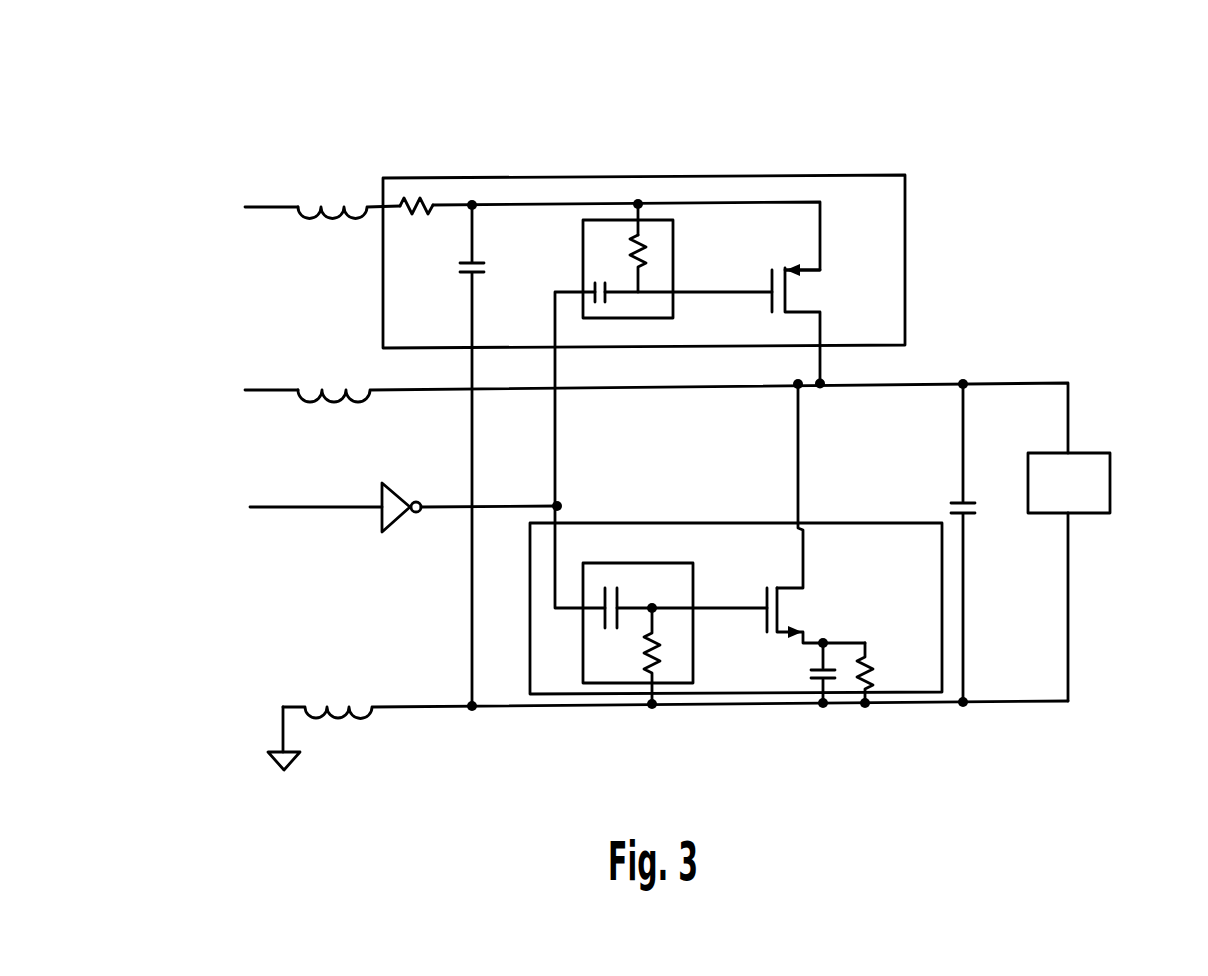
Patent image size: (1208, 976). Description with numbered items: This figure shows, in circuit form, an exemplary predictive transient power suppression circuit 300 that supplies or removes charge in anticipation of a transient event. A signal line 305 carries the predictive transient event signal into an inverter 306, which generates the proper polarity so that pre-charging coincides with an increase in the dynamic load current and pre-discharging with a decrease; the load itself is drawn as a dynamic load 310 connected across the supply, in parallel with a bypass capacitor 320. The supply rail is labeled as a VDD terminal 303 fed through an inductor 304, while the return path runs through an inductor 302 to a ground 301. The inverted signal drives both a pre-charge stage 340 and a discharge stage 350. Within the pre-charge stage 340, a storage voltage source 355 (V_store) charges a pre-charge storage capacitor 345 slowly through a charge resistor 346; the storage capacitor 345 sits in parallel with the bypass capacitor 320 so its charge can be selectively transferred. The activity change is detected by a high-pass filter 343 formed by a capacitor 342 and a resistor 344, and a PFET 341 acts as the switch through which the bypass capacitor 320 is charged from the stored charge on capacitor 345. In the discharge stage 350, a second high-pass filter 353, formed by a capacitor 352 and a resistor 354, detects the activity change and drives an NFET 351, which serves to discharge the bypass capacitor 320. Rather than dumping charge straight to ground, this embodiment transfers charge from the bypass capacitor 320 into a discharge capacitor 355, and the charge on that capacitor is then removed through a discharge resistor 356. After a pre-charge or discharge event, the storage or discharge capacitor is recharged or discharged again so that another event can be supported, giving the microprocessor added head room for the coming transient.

The predictive transient power suppression circuit 300 is at (134, 100).
The ground 301 is at (290, 764).
The ground inductor 302 is at (330, 700).
The VDD supply terminal 303 is at (245, 380).
The supply inductor 304 is at (335, 388).
The signal line 305 is at (255, 517).
The inverter 306 is at (407, 500).
The dynamic load 310 is at (1110, 460).
The bypass capacitor 320 is at (960, 503).
The pre-charge stage 340 is at (905, 197).
The PFET 341 is at (812, 287).
The capacitor 342 is at (583, 292).
The high-pass filter 343 is at (677, 312).
The resistor 344 is at (650, 245).
The pre-charge storage capacitor 345 is at (478, 266).
The charge resistor 346 is at (418, 195).
The discharge stage 350 is at (838, 523).
The NFET 351 is at (800, 605).
The capacitor 352 is at (619, 598).
The high-pass filter 353 is at (693, 578).
The resistor 354 is at (665, 650).
The discharge capacitor / voltage source 355 is at (243, 197).
The discharge resistor 356 is at (332, 205).